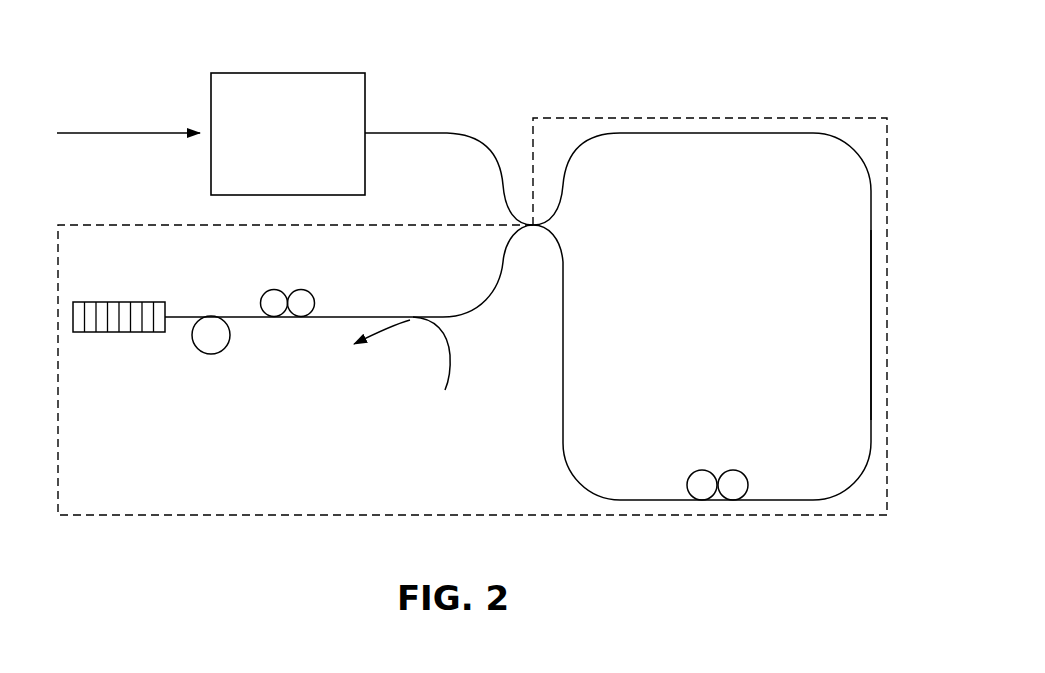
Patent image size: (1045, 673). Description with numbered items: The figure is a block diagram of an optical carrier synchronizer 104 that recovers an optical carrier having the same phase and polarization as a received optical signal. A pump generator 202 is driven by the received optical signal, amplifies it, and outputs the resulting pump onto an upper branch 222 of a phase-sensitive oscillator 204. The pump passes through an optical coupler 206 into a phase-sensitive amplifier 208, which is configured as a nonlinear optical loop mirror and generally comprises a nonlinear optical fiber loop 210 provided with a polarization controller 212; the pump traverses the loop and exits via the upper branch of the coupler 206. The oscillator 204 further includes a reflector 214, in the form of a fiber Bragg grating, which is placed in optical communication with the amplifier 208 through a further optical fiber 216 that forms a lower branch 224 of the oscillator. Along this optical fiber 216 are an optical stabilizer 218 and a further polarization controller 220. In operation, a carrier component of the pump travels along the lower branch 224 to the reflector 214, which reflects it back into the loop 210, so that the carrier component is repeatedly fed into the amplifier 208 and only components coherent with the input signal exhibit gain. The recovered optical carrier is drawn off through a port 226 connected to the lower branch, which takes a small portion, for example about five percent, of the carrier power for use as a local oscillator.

The optical carrier synchronizer 104 is at (615, 68).
The pump generator 202 is at (288, 134).
The phase-sensitive oscillator 204 is at (762, 117).
The optical coupler 206 is at (585, 229).
The phase-sensitive amplifier 208 is at (540, 455).
The nonlinear optical fiber loop 210 is at (870, 302).
The polarization controller 212 is at (718, 470).
The reflector 214 is at (136, 302).
The optical fiber 216 is at (353, 315).
The optical stabilizer 218 is at (210, 355).
The polarization controller 220 is at (288, 292).
The upper branch 222 is at (446, 114).
The lower branch 224 is at (258, 419).
The port 226 is at (450, 353).